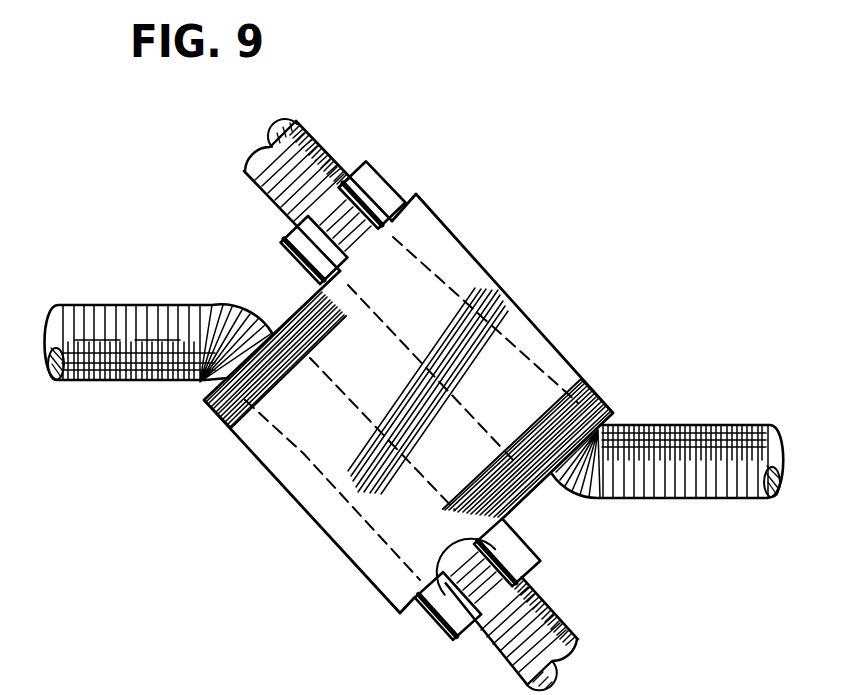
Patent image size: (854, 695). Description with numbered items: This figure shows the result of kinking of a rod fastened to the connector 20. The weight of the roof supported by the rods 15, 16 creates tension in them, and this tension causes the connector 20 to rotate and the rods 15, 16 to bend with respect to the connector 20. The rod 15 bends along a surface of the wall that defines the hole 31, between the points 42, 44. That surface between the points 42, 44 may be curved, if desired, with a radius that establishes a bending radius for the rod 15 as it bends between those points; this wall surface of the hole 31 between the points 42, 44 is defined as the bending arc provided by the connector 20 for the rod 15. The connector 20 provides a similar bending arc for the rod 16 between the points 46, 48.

The connector 20 is at (452, 232).
The rod 15 is at (128, 305).
The rod 16 is at (703, 424).
The hole 31 is at (340, 446).
The point 42 is at (226, 379).
The point 44 is at (302, 454).
The point 46 is at (613, 418).
The point 48 is at (507, 350).